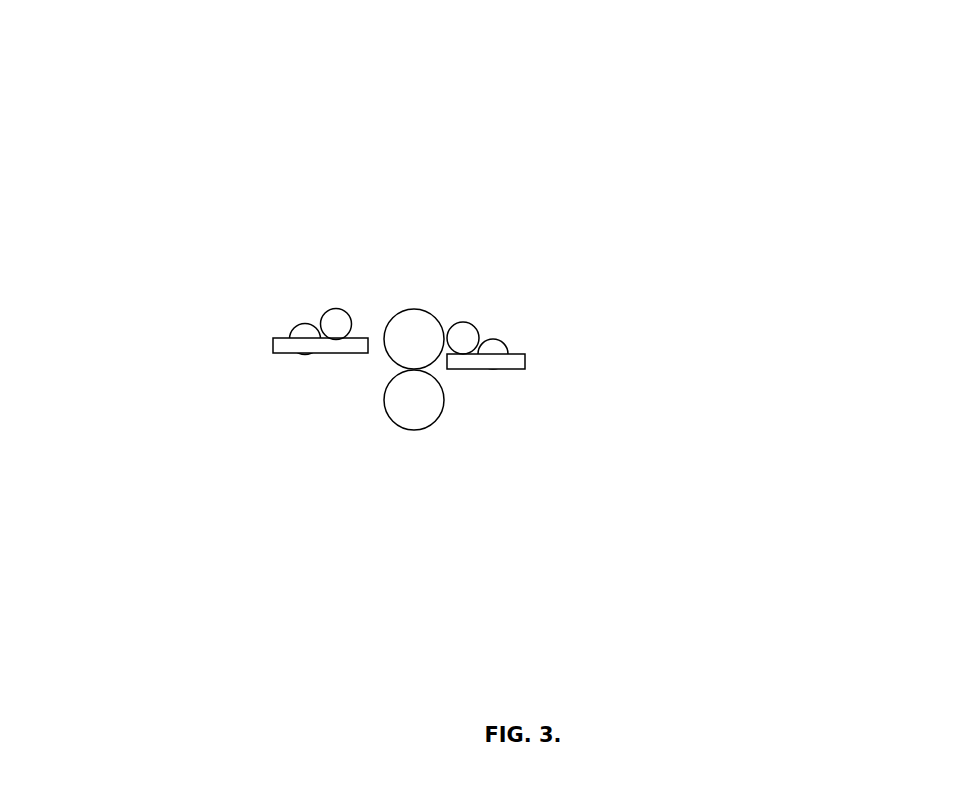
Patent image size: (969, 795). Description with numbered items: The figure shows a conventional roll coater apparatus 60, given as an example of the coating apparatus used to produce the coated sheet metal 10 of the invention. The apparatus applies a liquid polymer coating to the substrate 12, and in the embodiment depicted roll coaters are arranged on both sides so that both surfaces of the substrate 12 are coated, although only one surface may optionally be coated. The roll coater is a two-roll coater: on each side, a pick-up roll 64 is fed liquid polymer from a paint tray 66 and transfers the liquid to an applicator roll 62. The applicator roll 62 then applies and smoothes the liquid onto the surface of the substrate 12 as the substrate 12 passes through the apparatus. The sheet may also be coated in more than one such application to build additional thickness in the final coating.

The coated sheet metal 10 is at (414, 309).
The substrate 12 is at (427, 427).
The roll coater apparatus 60 is at (616, 122).
The applicator roll 62 is at (522, 237).
The pick-up roll 64 is at (302, 327).
The paint tray 66 is at (338, 347).